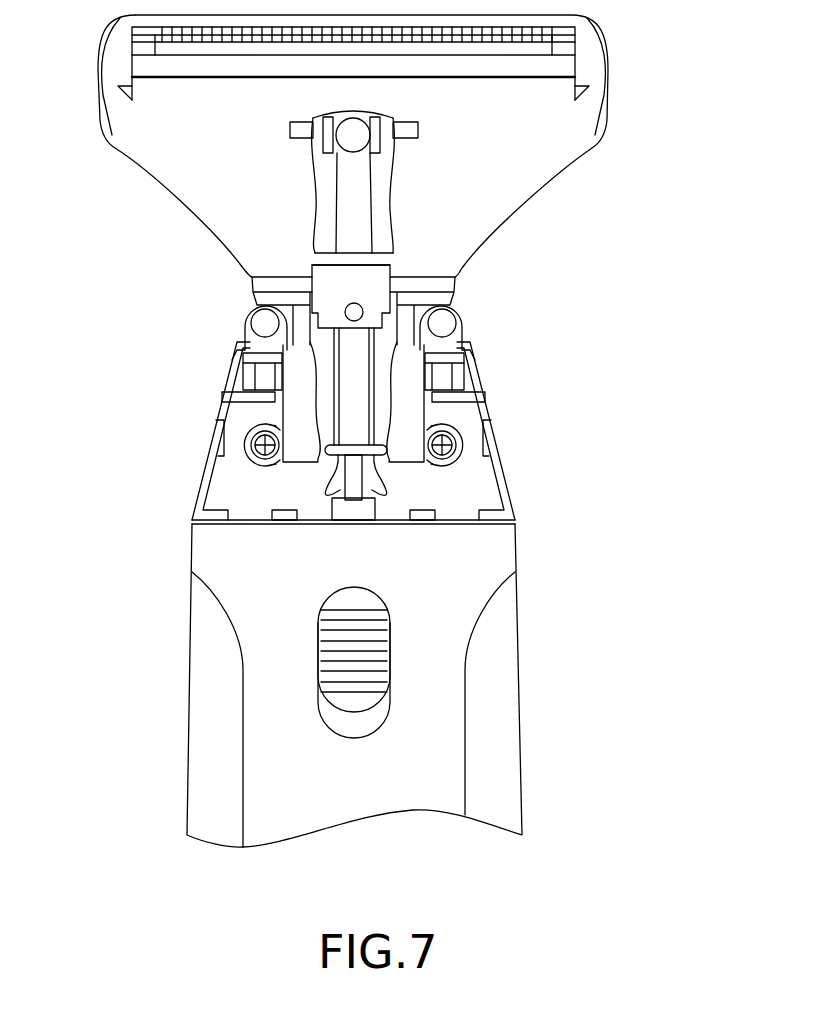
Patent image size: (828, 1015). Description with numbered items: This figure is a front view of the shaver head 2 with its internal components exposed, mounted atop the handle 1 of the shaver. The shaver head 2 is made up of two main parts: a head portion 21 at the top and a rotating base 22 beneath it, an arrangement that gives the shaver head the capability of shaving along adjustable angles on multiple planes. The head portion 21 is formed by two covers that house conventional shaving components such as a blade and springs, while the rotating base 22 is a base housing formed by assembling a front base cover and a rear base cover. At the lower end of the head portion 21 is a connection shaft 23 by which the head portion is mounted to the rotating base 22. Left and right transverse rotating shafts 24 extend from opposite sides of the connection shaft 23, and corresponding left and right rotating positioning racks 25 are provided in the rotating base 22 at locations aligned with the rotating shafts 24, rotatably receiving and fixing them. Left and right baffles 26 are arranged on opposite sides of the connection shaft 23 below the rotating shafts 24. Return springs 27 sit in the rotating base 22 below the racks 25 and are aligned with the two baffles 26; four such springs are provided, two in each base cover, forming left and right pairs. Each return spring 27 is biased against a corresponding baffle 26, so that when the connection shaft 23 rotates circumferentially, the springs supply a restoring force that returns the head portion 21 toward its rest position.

The handle 1 is at (510, 697).
The shaver head 2 is at (585, 252).
The head portion 21 is at (233, 203).
The rotating base 22 is at (473, 485).
The connection shaft 23 is at (412, 383).
The rotating shafts 24 is at (263, 377).
The rotating positioning racks 25 is at (257, 400).
The baffles 26 is at (252, 450).
The return springs 27 is at (253, 448).